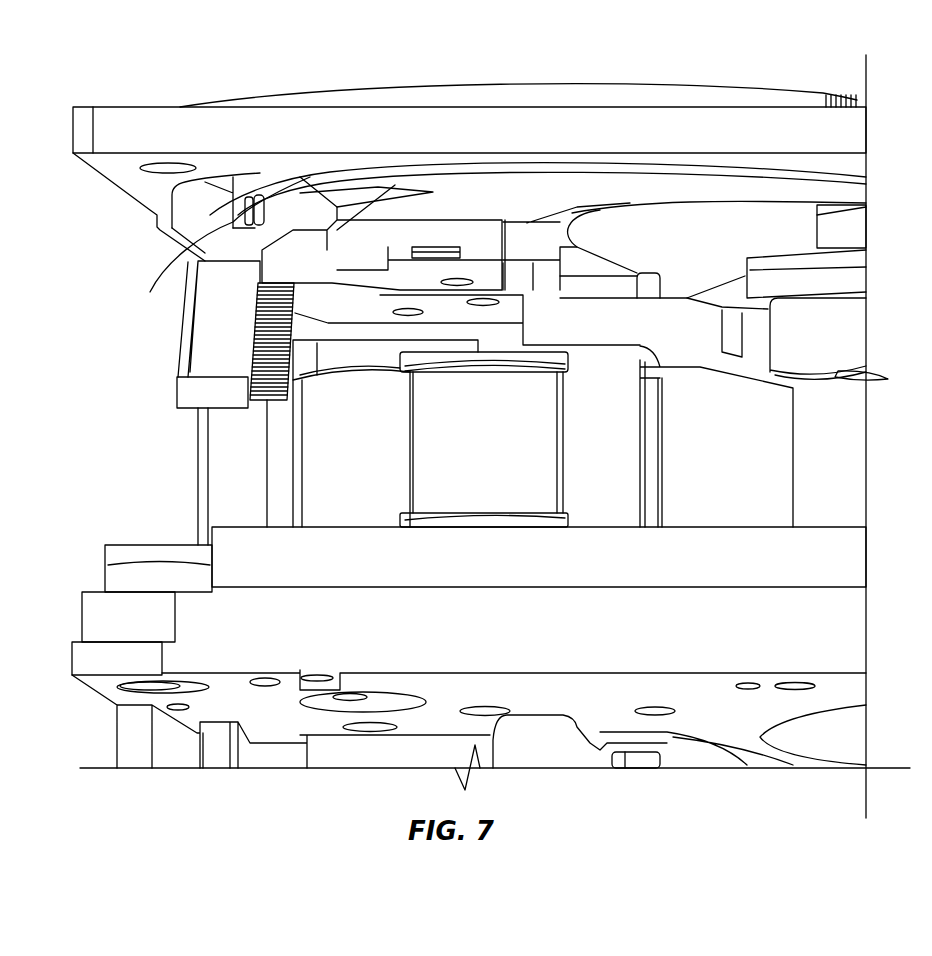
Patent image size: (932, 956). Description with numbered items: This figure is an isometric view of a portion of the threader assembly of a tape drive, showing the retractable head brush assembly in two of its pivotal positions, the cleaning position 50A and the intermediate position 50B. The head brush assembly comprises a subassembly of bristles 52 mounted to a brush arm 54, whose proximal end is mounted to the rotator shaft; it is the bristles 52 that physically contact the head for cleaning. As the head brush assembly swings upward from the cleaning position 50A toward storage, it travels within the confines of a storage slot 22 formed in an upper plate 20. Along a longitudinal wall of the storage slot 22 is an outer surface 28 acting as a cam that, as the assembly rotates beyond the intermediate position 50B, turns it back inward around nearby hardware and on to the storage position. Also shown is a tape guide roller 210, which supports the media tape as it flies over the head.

The upper plate 20 is at (123, 117).
The storage slot 22 is at (390, 200).
The outer surface 28 is at (243, 212).
The brush arm 54 is at (205, 305).
The bristles 52 is at (260, 402).
The intermediate position 50B is at (173, 392).
The cleaning position 50A is at (218, 487).
The tape guide roller 210 is at (348, 497).